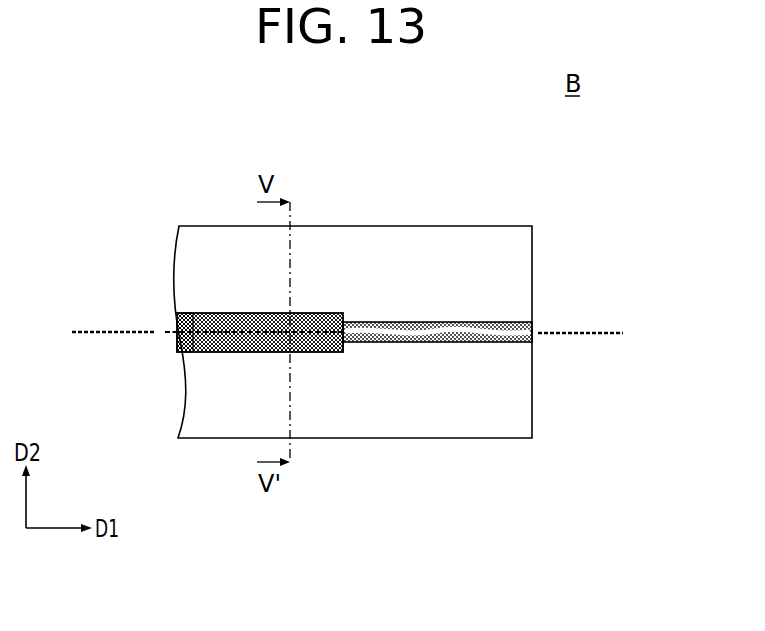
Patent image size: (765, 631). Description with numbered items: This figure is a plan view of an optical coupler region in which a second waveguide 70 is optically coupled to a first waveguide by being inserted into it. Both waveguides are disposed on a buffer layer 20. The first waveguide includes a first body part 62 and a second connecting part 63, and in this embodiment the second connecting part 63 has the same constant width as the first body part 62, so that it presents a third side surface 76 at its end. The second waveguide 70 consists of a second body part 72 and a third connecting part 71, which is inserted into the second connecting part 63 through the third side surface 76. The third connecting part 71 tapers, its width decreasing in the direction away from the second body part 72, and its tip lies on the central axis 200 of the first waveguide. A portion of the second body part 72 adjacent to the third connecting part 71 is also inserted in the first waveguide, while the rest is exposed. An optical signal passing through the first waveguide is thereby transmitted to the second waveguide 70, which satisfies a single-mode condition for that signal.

The buffer layer 20 is at (513, 275).
The central axis 200 is at (105, 331).
The first body part 62 is at (170, 325).
The second connecting part 63 is at (212, 313).
The second waveguide 70 is at (417, 223).
The third connecting part 71 is at (302, 313).
The second body part 72 is at (362, 322).
The third side surface 76 is at (346, 347).